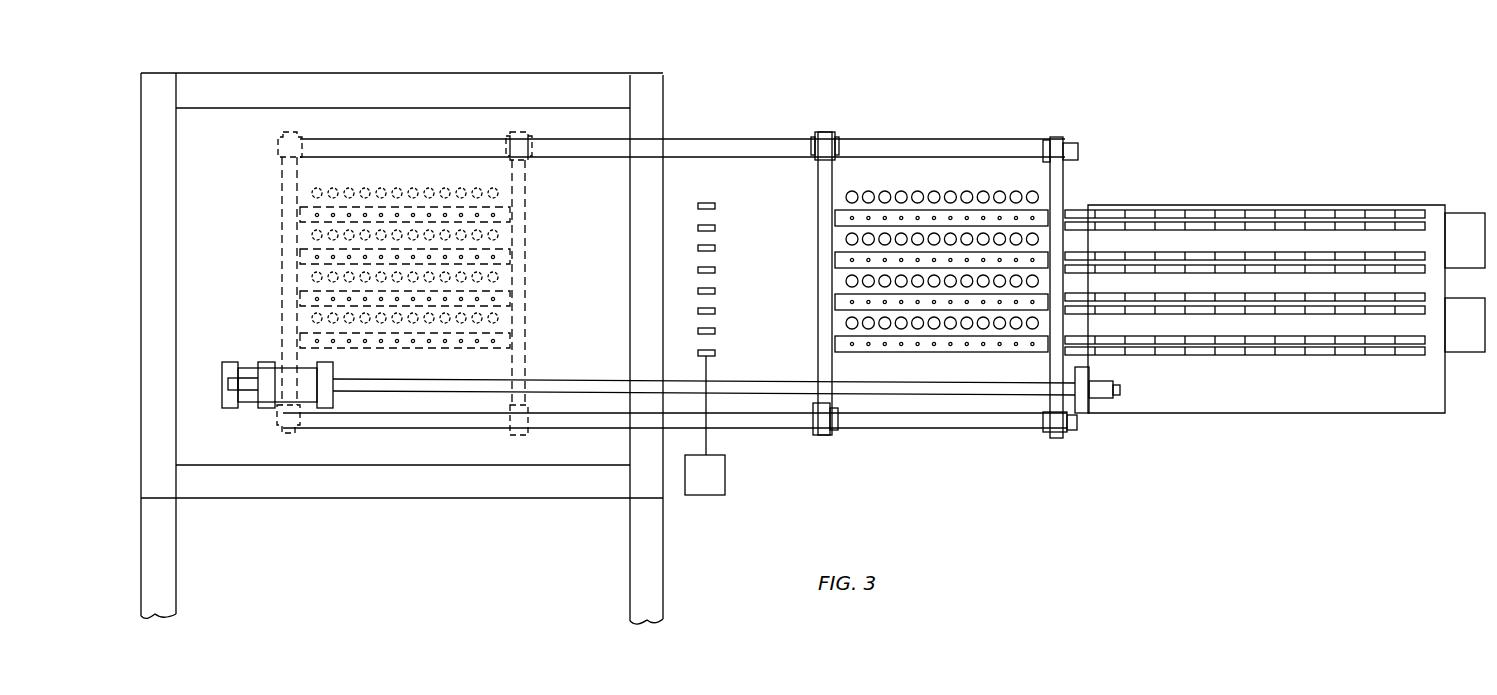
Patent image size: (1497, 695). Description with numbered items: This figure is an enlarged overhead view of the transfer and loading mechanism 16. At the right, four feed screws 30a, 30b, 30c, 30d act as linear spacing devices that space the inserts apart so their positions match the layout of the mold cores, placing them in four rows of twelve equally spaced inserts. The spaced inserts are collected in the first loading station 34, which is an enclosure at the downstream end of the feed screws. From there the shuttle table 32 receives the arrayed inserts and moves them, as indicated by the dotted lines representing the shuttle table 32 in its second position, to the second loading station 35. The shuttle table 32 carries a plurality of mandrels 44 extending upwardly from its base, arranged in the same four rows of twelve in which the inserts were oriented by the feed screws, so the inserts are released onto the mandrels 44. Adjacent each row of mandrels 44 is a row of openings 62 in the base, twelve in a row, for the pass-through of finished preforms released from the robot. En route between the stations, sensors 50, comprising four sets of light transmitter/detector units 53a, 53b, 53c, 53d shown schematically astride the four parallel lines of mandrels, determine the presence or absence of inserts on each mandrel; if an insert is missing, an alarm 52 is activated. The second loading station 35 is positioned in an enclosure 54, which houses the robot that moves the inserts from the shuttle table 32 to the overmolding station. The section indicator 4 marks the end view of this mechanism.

The section line 4- 4 is at (208, 543).
The transfer and loading mechanism 16 is at (1035, 132).
The feed screw 30a is at (1235, 215).
The feed screw 30b is at (1313, 260).
The feed screw 30c is at (1228, 303).
The feed screw 30d is at (1347, 343).
The shuttle table 32 is at (378, 162).
The first loading station 34 is at (1032, 195).
The second loading station 35 is at (502, 130).
The mandrels 44 is at (933, 215).
The sensors 50 is at (708, 167).
The alarm 52 is at (720, 474).
The light transmitter/detector unit 53a is at (739, 217).
The light transmitter/detector unit 53b is at (739, 259).
The light transmitter/detector unit 53c is at (738, 302).
The light transmitter/detector unit 53d is at (739, 342).
The enclosure 54 is at (387, 483).
The openings 62 is at (400, 193).